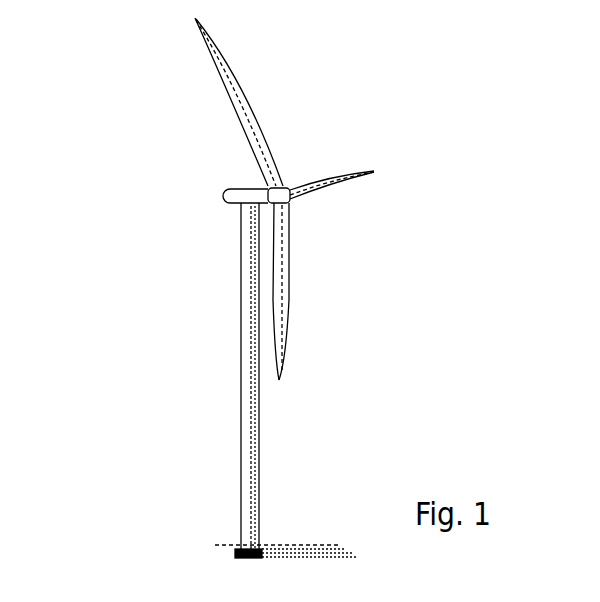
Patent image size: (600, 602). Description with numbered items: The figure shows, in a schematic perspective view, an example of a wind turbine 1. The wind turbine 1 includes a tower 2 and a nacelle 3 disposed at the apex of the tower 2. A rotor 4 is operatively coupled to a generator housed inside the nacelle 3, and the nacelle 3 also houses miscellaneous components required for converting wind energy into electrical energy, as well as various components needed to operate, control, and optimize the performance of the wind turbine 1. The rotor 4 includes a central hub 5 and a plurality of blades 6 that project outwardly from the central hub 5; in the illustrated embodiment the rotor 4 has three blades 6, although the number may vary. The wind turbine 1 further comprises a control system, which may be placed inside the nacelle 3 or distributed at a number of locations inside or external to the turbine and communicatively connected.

The wind turbine 1 is at (108, 149).
The tower 2 is at (243, 318).
The nacelle 3 is at (235, 188).
The rotor 4 is at (353, 263).
The central hub 5 is at (281, 185).
The blades 6 is at (242, 108).